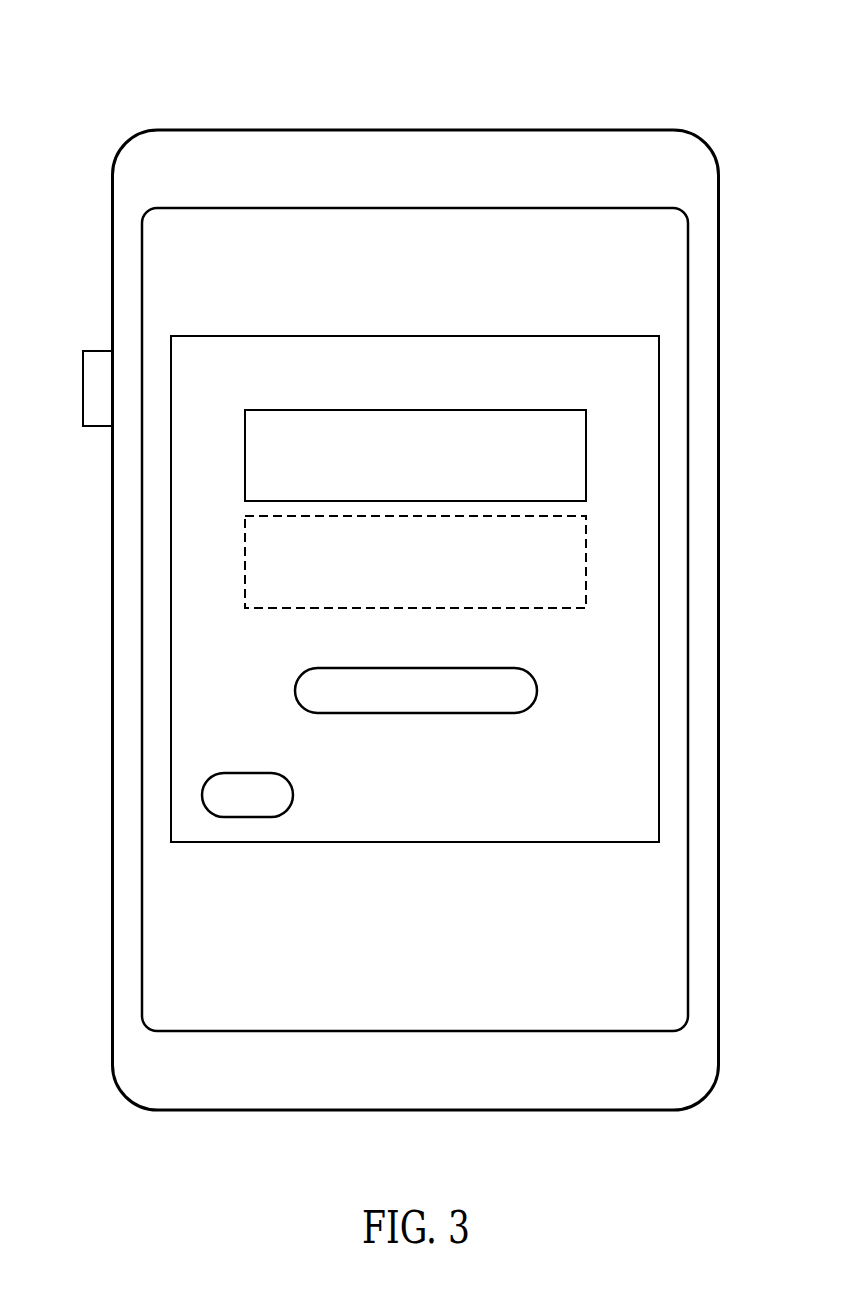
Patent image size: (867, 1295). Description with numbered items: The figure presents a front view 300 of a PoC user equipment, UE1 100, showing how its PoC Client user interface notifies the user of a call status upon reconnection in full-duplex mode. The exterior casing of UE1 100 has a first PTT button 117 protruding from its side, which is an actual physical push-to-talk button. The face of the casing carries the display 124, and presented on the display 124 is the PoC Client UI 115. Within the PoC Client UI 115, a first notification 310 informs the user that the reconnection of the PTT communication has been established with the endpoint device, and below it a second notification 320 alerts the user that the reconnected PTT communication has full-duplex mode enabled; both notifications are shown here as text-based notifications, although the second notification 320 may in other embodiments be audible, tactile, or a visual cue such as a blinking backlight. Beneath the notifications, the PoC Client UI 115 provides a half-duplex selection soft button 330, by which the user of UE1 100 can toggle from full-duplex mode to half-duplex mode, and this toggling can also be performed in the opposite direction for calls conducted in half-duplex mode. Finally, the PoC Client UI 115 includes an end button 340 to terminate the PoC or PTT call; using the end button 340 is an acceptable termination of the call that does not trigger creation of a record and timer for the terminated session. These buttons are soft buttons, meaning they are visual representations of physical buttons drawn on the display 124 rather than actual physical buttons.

The front view 300 is at (763, 44).
The PoC UE1 100 is at (224, 129).
The first PTT button 117 is at (83, 389).
The display 124 is at (224, 207).
The PoC Client UI 115 is at (223, 335).
The first notification 310 is at (245, 460).
The second notification 320 is at (245, 565).
The half-duplex selection soft button 330 is at (296, 693).
The end button 340 is at (293, 796).